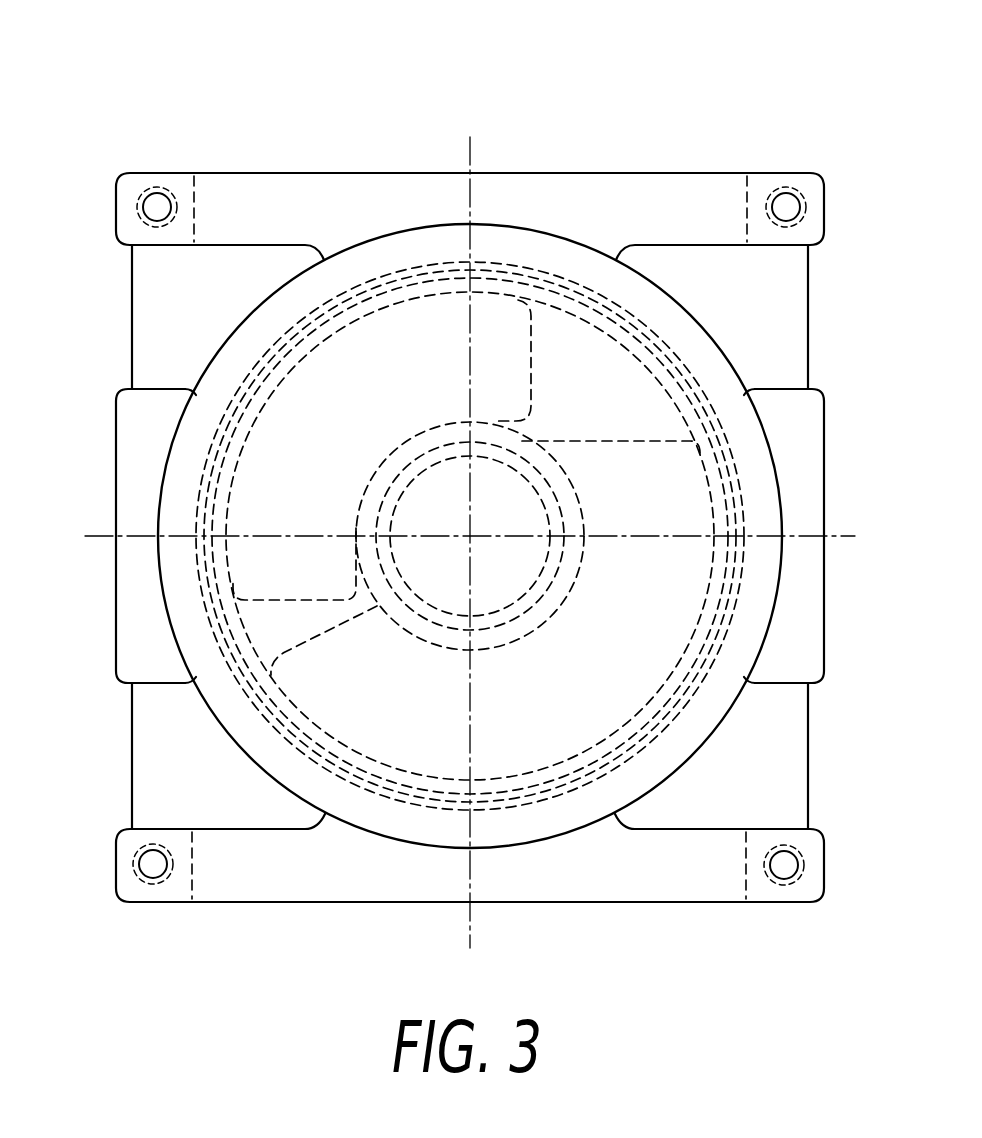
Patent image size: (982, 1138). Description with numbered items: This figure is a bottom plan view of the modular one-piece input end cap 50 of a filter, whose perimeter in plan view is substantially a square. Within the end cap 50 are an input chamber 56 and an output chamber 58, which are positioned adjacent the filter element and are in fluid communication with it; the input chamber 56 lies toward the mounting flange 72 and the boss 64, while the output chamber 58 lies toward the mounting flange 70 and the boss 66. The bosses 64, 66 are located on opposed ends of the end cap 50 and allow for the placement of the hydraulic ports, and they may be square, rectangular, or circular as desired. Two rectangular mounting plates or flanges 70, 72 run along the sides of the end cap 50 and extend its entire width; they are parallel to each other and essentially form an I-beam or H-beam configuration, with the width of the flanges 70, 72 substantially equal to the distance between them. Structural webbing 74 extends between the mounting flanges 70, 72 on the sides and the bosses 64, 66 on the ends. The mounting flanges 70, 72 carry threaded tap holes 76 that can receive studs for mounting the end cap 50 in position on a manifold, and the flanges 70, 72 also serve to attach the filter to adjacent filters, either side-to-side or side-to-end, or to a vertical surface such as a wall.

The one-piece input end cap 50 is at (503, 128).
The input chamber 56 is at (262, 455).
The output chamber 58 is at (510, 762).
The boss 64 is at (137, 593).
The boss 66 is at (805, 603).
The mounting flange 70 is at (677, 880).
The mounting flange 72 is at (660, 190).
The structural webbing 74 is at (158, 312).
The threaded tap holes 76 is at (140, 200).